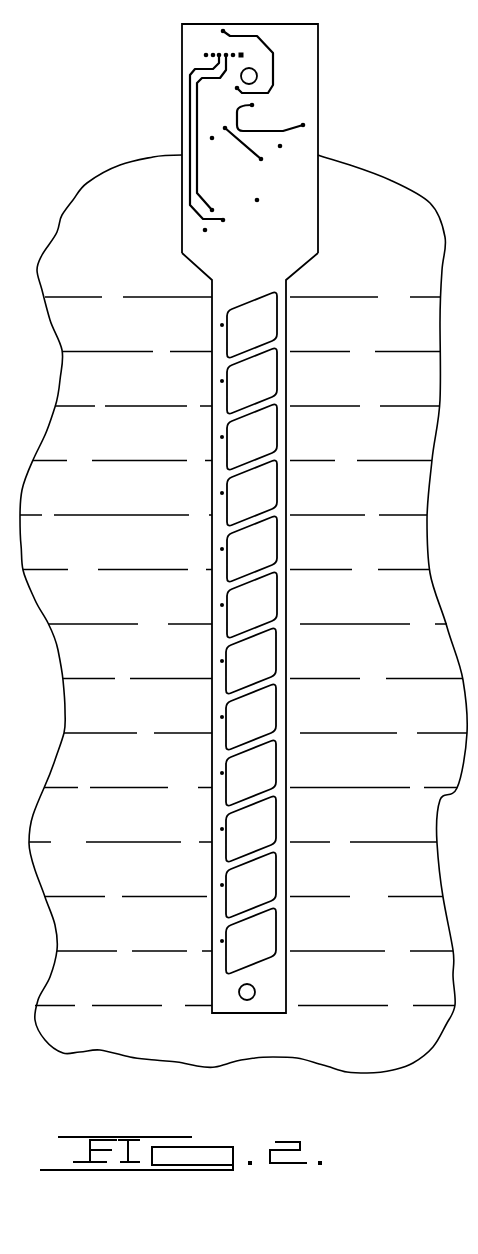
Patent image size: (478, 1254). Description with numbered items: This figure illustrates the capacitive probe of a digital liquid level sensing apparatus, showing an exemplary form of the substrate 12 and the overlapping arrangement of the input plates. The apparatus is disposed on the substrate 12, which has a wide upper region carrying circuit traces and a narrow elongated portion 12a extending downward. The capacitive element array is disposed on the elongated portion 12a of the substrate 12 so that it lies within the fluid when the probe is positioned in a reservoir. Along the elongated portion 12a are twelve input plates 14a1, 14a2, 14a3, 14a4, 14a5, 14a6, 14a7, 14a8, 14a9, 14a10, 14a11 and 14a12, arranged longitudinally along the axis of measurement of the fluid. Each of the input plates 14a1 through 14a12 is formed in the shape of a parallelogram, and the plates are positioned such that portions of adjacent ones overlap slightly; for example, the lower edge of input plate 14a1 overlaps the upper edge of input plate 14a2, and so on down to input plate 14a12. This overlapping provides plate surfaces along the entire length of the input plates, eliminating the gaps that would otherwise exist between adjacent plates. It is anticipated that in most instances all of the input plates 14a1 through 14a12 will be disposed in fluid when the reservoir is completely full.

The substrate 12 is at (305, 72).
The elongated portion of the substrate 12a is at (213, 287).
The input plate 14a1 is at (277, 328).
The input plate 14a2 is at (277, 381).
The input plate 14a3 is at (277, 436).
The input plate 14a4 is at (277, 488).
The input plate 14a5 is at (277, 548).
The input plate 14a6 is at (277, 597).
The input plate 14a7 is at (276, 653).
The input plate 14a8 is at (276, 707).
The input plate 14a9 is at (276, 762).
The input plate 14a10 is at (276, 813).
The input plate 14a11 is at (276, 875).
The input plate 14a12 is at (276, 928).